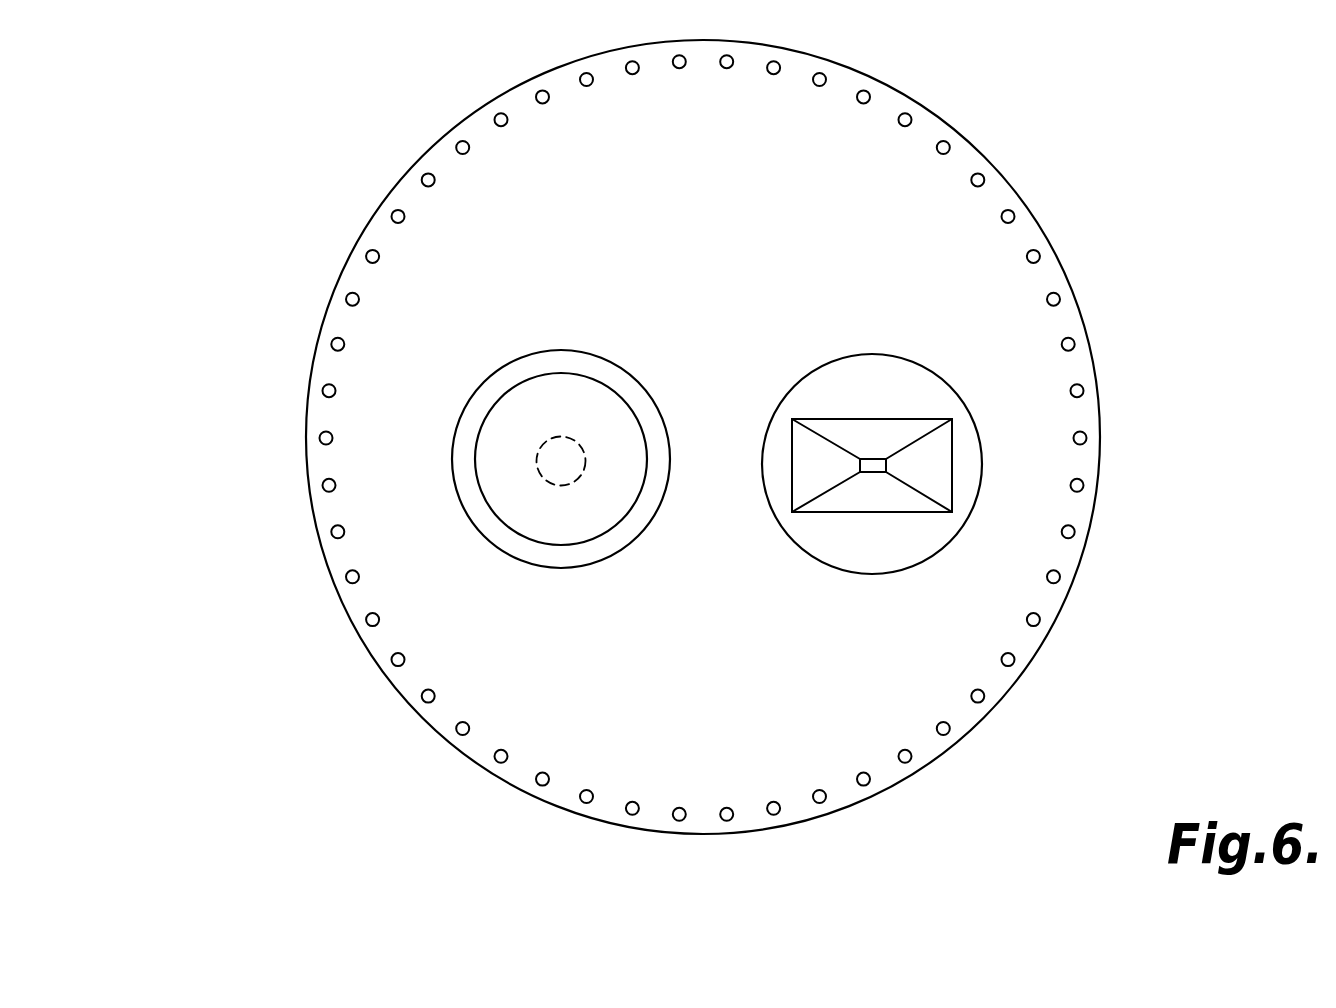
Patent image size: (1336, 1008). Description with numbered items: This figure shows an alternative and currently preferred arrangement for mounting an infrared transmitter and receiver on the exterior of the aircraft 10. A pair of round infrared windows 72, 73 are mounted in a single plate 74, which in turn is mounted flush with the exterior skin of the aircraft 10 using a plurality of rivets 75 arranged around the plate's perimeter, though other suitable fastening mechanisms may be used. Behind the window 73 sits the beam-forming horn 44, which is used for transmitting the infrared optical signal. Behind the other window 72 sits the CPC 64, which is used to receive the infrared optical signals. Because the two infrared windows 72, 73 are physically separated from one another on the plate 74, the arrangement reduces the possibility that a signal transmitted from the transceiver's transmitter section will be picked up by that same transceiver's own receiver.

The aircraft 10 is at (187, 102).
The plate 74 is at (333, 298).
The rivets 75 is at (977, 177).
The infrared window 72 is at (453, 487).
The CPC 64 is at (565, 533).
The infrared window 73 is at (972, 513).
The beam-forming horn 44 is at (895, 432).